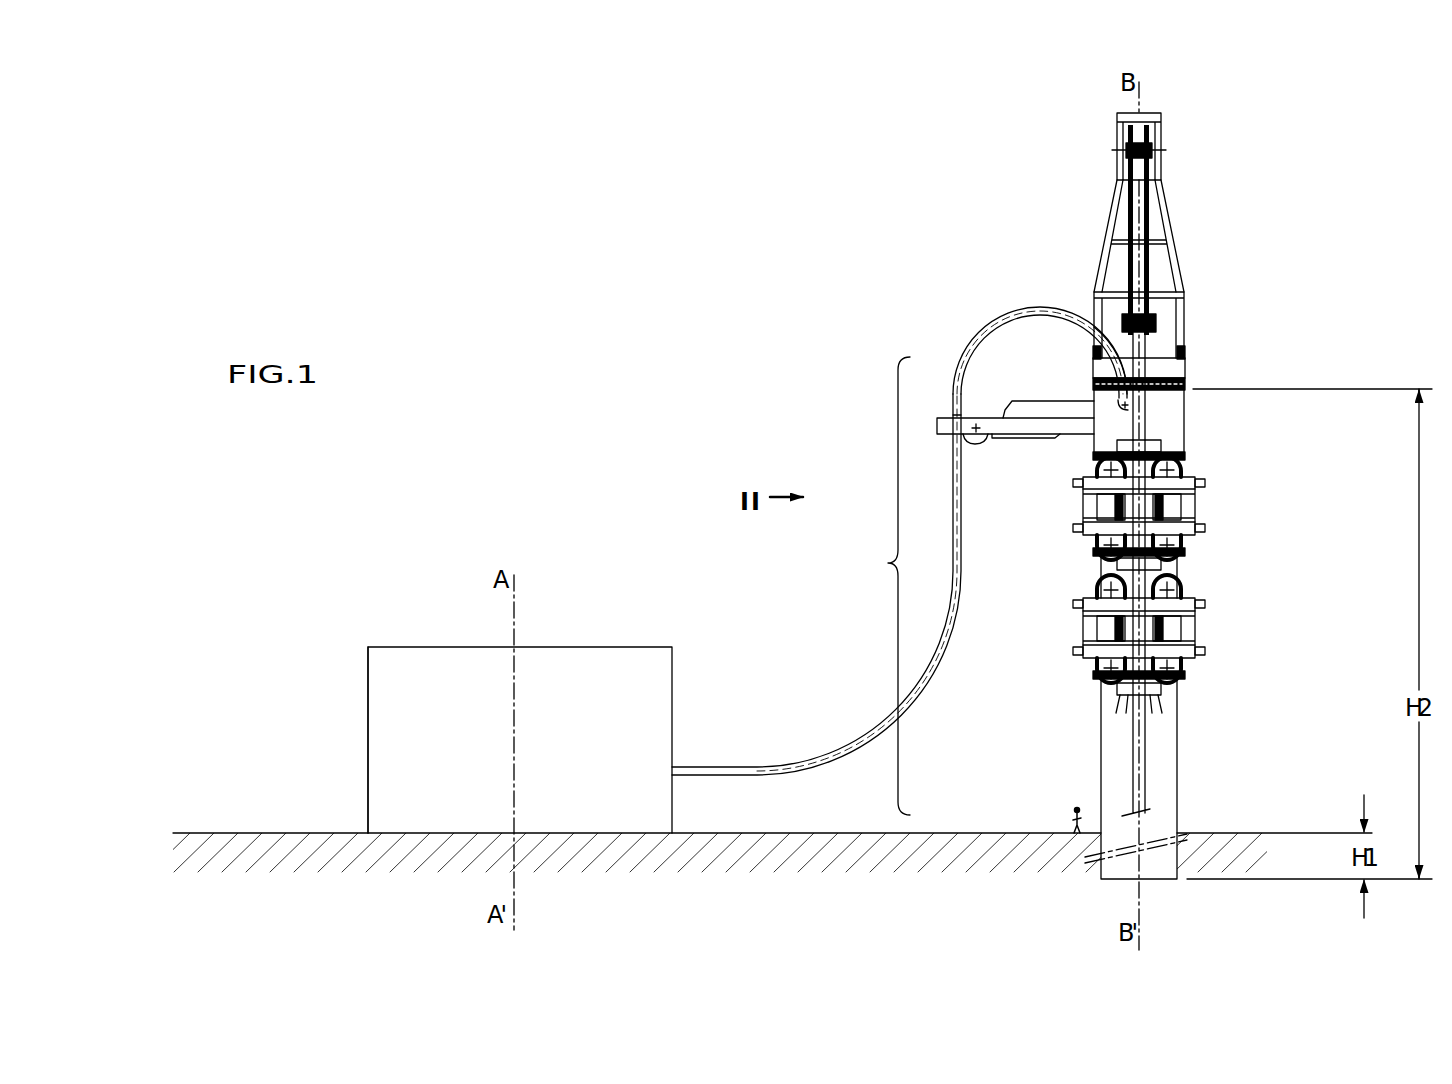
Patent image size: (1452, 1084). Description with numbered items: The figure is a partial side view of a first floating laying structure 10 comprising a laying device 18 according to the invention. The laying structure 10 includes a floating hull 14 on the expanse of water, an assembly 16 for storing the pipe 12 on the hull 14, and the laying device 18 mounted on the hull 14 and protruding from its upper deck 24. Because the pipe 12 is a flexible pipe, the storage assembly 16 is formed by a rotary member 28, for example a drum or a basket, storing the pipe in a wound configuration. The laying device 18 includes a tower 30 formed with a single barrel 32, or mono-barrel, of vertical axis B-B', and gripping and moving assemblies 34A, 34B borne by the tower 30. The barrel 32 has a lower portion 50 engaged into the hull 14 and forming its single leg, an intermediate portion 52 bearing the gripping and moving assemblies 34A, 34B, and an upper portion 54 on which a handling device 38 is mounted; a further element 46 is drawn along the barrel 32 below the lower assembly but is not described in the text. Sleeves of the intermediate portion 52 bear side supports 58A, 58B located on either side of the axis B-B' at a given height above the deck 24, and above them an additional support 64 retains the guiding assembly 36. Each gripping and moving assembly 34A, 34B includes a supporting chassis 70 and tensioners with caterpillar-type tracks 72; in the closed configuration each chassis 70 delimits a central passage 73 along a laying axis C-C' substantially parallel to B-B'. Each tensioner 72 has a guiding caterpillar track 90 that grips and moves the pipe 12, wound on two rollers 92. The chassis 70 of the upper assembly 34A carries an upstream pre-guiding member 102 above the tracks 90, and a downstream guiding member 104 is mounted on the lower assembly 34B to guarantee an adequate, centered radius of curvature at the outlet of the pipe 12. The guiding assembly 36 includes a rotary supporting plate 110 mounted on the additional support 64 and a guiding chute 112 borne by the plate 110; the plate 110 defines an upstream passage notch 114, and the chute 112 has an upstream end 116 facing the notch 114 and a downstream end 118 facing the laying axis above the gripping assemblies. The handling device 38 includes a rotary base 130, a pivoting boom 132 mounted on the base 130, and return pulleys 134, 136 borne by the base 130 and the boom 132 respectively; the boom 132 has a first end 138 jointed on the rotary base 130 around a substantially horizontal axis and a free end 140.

The floating laying structure 10 is at (460, 345).
The pipe 12 is at (972, 625).
The floating hull 14 is at (935, 858).
The assembly for storing the pipe 16 is at (415, 635).
The laying device 18 is at (1300, 285).
The upper deck 24 is at (827, 833).
The rotary member 28 is at (368, 714).
The tower 30 is at (1206, 468).
The single barrel 32 is at (1194, 766).
The gripping and moving assembly 34A is at (1212, 516).
The gripping and moving assembly 34B is at (1212, 636).
The guiding assembly 36 is at (950, 334).
The handling device 38 is at (1212, 236).
The tubing string 46 is at (1105, 785).
The lower portion of the barrel 50 is at (1057, 836).
The intermediate portion of the barrel 52 is at (885, 586).
The upper portion of the barrel 54 is at (1192, 355).
The side support 58A is at (1064, 535).
The side support 58B is at (1066, 677).
The additional support 64 is at (1105, 447).
The supporting chassis 70 is at (1185, 529).
The caterpillar-type track tensioner 72 is at (1178, 444).
The central passage 73 is at (1148, 512).
The guiding caterpillar track 90 is at (1168, 690).
The rollers 92 is at (1168, 595).
The upstream pre-guiding member 102 is at (1065, 446).
The downstream guiding member 104 is at (1118, 565).
The rotary supporting plate 110 is at (1012, 440).
The guiding chute 112 is at (1030, 348).
The upstream passage notch 114 is at (935, 426).
The upstream end of the chute 116 is at (957, 418).
The downstream end of the chute 118 is at (1148, 415).
The rotary base 130 is at (1162, 372).
The pivoting boom 132 is at (1158, 195).
The return pulley 134 is at (1118, 300).
The return pulley 136 is at (1128, 136).
The first end of the boom 138 is at (1180, 350).
The free end of the boom 140 is at (1150, 113).